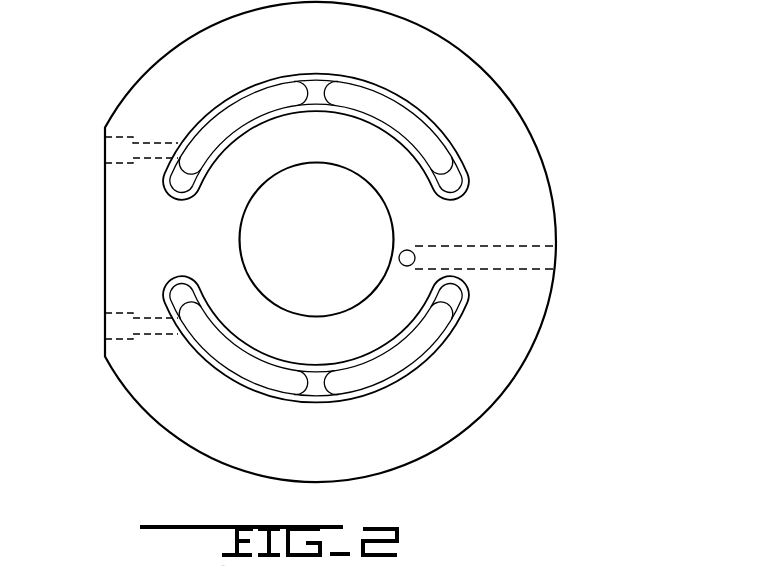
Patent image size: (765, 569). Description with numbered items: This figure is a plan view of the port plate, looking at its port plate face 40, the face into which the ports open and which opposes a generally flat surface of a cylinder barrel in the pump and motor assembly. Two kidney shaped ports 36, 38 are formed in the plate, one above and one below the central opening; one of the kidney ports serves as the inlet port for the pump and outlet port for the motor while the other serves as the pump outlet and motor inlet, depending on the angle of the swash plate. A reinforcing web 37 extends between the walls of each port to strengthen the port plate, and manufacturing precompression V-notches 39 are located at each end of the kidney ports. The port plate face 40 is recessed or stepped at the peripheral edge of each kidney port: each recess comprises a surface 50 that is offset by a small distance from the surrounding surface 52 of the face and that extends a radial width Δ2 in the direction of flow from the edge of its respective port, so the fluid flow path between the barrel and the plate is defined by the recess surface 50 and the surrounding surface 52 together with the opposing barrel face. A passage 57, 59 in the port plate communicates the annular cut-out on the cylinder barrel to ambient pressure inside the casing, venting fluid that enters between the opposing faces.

The radial width Δ 2 is at (270, 105).
The kidney shaped port 36 is at (230, 106).
The reinforcing web 37 is at (321, 88).
The kidney shaped port 38 is at (236, 364).
The precompression V-notch 39 is at (181, 181).
The port plate face 40 is at (447, 422).
The recess surface 50 is at (251, 118).
The surrounding surface 52 is at (392, 73).
The passage 57 is at (406, 250).
The passage 59 is at (496, 248).